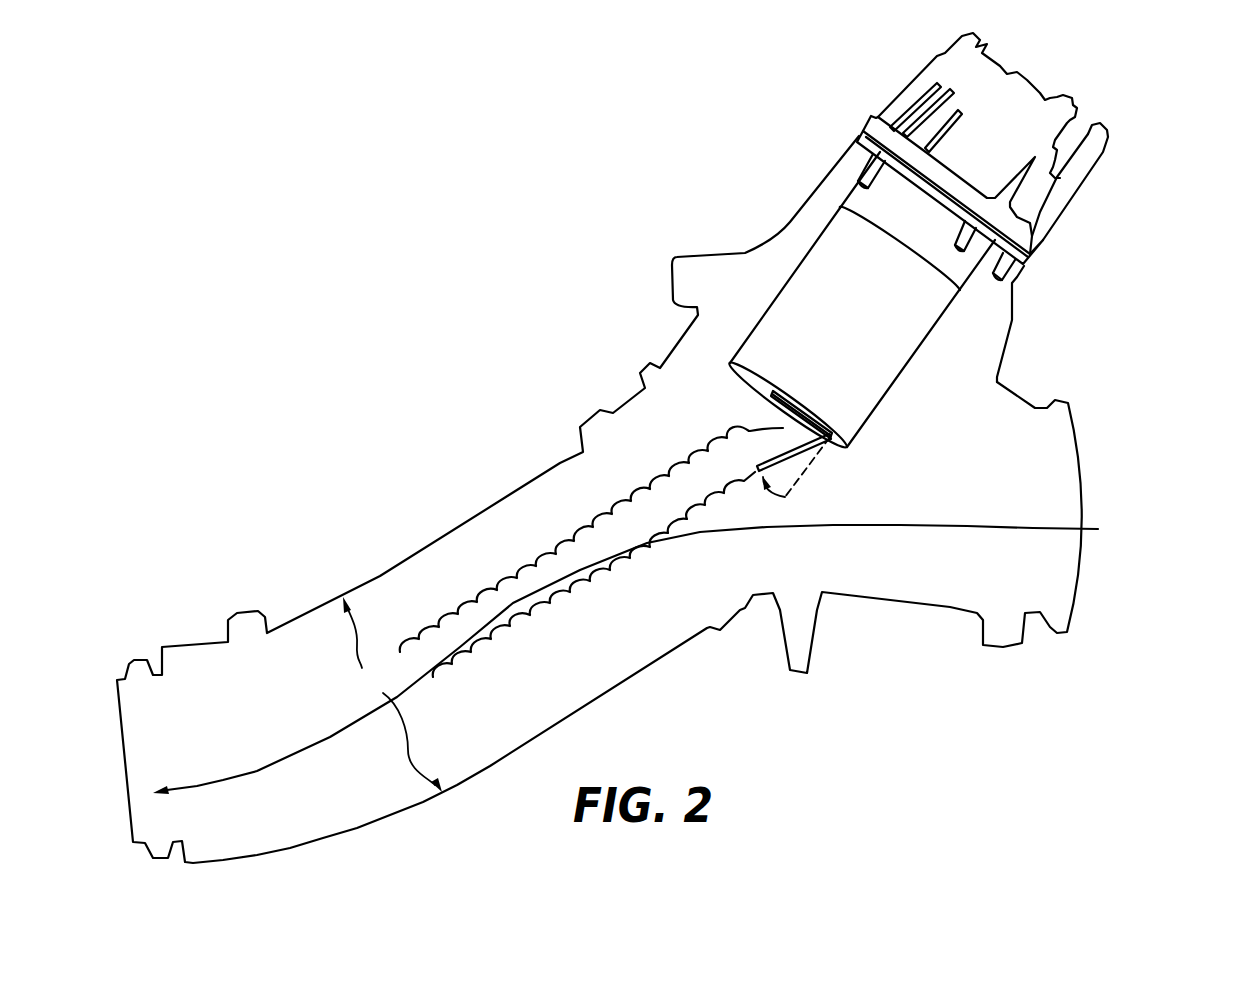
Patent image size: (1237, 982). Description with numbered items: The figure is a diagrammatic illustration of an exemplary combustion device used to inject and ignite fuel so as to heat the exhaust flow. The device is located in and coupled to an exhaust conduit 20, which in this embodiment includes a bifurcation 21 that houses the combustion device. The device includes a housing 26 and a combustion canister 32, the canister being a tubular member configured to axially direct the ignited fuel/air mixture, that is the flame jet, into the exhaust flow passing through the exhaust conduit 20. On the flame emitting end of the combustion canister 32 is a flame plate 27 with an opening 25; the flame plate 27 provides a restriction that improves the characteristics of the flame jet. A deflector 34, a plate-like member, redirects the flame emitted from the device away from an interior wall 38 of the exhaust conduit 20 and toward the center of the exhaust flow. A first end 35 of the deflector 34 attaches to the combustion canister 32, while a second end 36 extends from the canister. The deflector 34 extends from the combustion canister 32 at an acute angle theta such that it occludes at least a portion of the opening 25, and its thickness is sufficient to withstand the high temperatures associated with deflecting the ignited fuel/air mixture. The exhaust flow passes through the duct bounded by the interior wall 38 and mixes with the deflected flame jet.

The exhaust conduit 20 is at (313, 613).
The bifurcation 21 is at (1012, 328).
The opening 25 is at (791, 438).
The housing 26 is at (1053, 220).
The flame plate 27 is at (750, 377).
The combustion canister 32 is at (908, 354).
The deflector 34 is at (750, 431).
The first end 35 is at (830, 434).
The second end 36 is at (758, 470).
The interior wall 38 is at (392, 694).